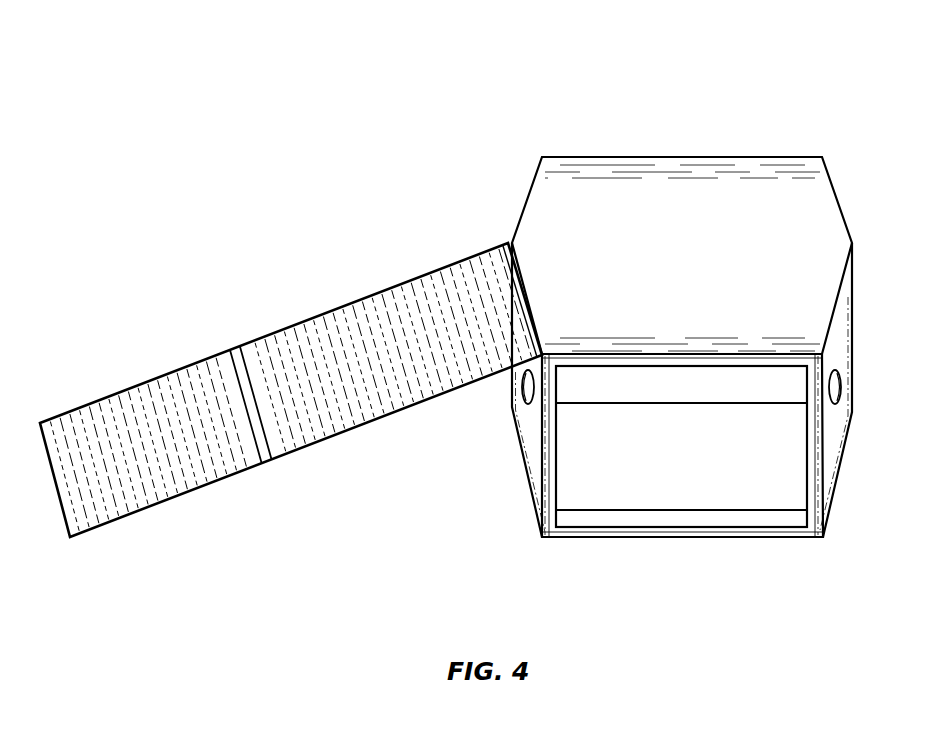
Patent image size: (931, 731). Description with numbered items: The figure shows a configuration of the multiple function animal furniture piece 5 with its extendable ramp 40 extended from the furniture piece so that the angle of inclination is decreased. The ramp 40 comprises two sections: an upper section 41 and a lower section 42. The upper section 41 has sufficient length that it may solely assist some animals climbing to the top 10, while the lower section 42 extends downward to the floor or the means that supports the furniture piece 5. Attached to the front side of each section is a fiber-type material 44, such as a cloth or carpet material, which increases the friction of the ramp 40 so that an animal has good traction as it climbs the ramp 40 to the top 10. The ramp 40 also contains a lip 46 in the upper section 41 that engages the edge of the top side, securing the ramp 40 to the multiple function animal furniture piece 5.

The multiple function animal furniture piece 5 is at (144, 40).
The top 10 is at (689, 268).
The extendable ramp 40 is at (305, 262).
The upper section 41 is at (371, 424).
The lower section 42 is at (190, 491).
The fiber-type material 44 is at (166, 377).
The lip 46 is at (501, 244).